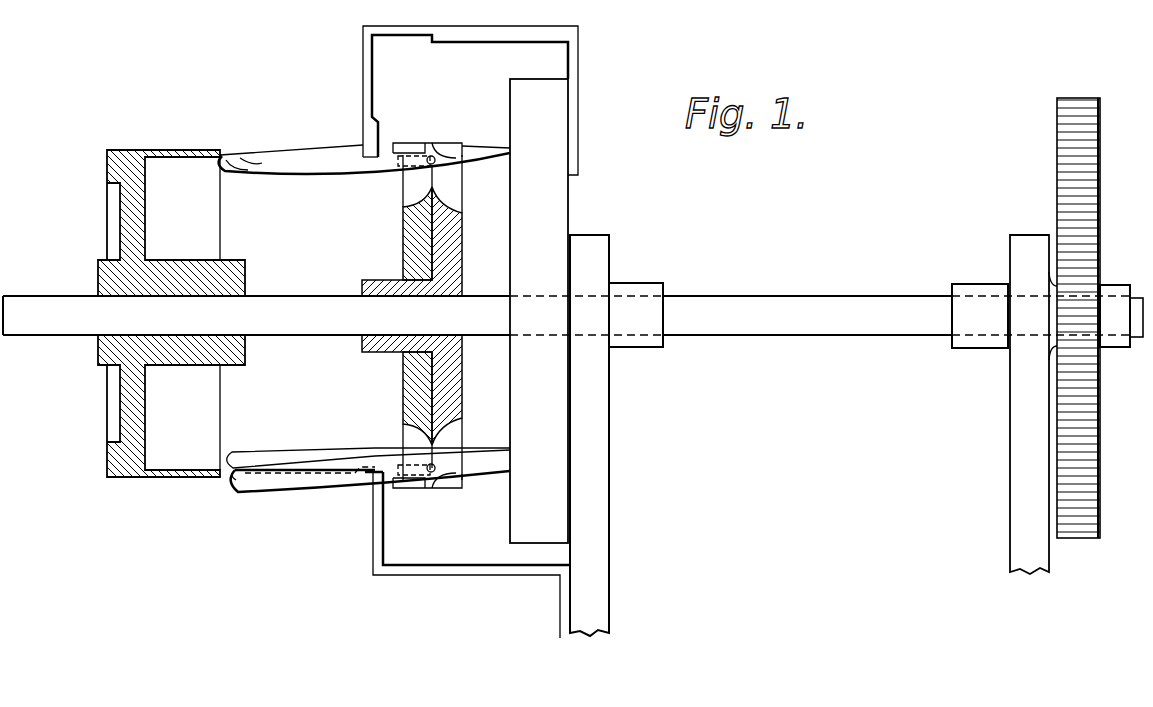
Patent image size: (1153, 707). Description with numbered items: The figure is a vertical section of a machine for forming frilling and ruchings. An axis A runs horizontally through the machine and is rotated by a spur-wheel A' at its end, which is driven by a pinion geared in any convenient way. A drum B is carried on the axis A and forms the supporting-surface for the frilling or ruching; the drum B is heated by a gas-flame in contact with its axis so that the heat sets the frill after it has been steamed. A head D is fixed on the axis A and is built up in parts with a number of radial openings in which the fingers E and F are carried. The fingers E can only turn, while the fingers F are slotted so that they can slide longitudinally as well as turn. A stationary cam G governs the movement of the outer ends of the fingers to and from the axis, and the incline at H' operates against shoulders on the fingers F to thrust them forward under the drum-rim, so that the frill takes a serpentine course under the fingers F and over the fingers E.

The axis A is at (573, 315).
The spur-wheel A' is at (1067, 336).
The drum B is at (171, 313).
The head D is at (420, 315).
The fingers E is at (314, 178).
The fingers F is at (215, 160).
The stationary cam G is at (559, 357).
The incline H' is at (470, 332).